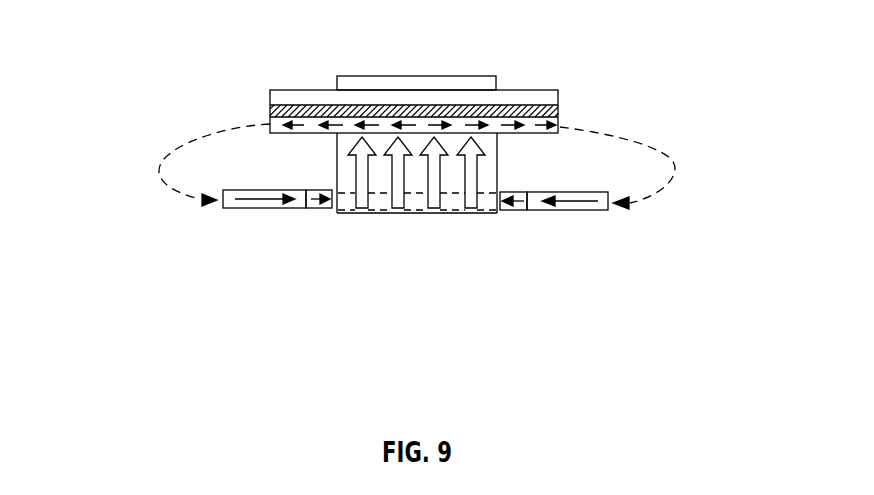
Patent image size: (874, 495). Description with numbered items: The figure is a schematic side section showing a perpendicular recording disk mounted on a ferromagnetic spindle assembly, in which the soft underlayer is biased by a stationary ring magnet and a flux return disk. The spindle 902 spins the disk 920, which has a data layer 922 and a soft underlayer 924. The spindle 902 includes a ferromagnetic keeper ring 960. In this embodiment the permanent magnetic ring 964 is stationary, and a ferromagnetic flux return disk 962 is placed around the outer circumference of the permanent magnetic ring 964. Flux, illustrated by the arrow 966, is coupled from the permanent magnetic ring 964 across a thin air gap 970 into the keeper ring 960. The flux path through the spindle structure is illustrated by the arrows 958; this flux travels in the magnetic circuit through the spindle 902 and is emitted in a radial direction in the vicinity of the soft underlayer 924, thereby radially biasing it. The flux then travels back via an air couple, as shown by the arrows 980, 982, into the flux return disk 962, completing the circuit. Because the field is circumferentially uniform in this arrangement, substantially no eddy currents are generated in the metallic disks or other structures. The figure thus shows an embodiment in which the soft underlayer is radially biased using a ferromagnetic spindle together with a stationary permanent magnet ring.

The spindle 902 is at (455, 327).
The disk 920 is at (547, 87).
The data layer 922 is at (560, 114).
The soft underlayer 924 is at (537, 132).
The flux path arrows 958 is at (337, 148).
The ferromagnetic keeper ring 960 is at (342, 213).
The ferromagnetic flux return disk 962 is at (240, 203).
The permanent magnetic ring 964 is at (313, 208).
The flux arrow 966 is at (518, 212).
The thin air gap 970 is at (498, 213).
The return flux arrow 980 is at (167, 152).
The return flux arrow 982 is at (677, 170).